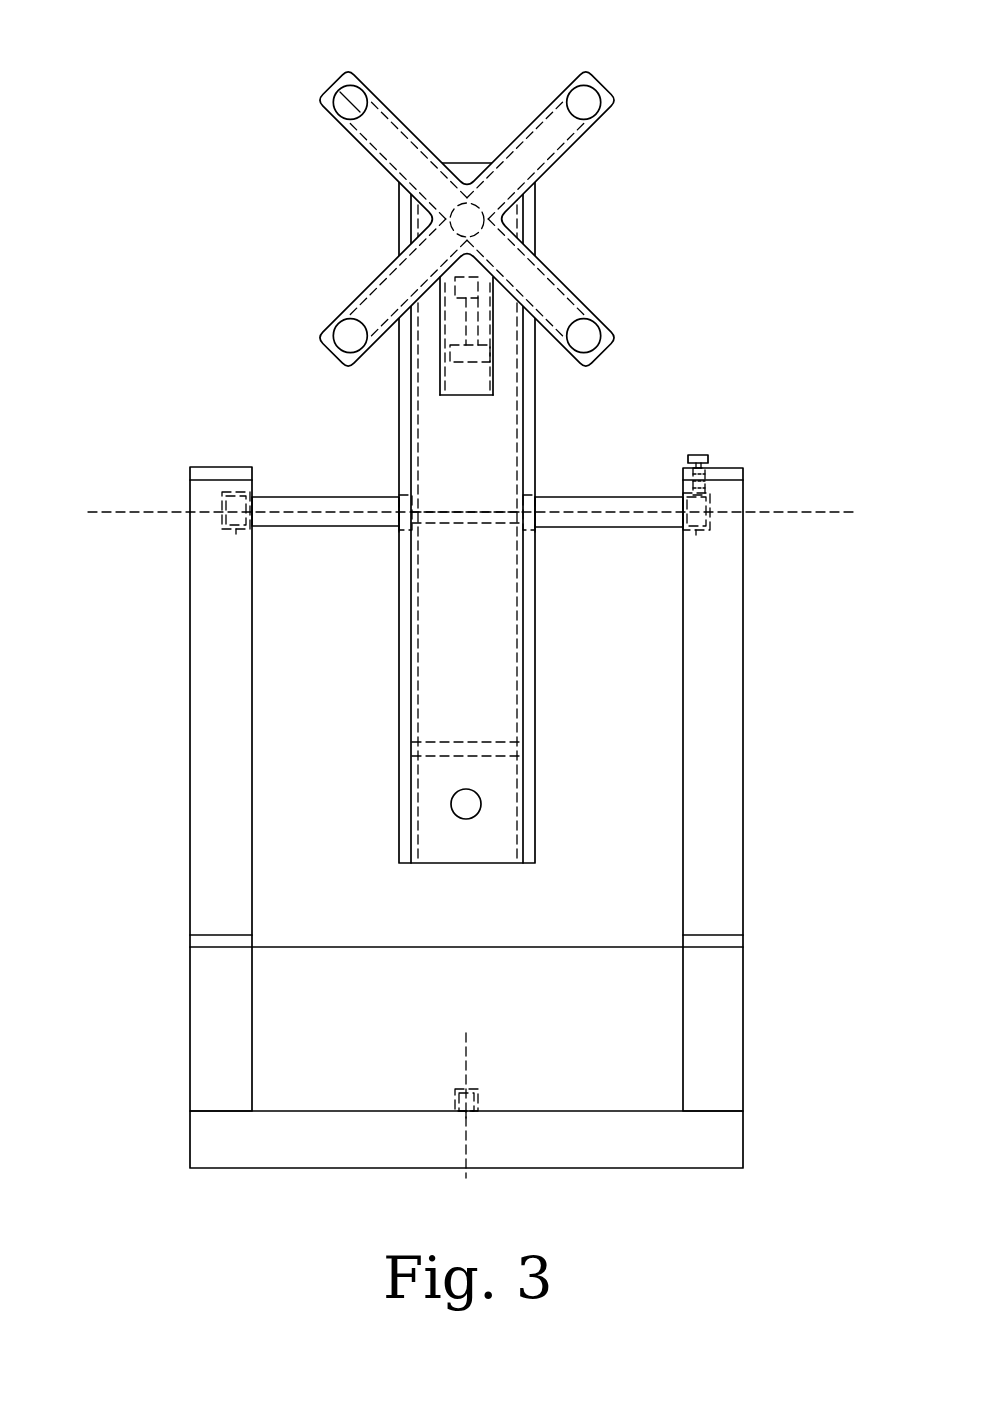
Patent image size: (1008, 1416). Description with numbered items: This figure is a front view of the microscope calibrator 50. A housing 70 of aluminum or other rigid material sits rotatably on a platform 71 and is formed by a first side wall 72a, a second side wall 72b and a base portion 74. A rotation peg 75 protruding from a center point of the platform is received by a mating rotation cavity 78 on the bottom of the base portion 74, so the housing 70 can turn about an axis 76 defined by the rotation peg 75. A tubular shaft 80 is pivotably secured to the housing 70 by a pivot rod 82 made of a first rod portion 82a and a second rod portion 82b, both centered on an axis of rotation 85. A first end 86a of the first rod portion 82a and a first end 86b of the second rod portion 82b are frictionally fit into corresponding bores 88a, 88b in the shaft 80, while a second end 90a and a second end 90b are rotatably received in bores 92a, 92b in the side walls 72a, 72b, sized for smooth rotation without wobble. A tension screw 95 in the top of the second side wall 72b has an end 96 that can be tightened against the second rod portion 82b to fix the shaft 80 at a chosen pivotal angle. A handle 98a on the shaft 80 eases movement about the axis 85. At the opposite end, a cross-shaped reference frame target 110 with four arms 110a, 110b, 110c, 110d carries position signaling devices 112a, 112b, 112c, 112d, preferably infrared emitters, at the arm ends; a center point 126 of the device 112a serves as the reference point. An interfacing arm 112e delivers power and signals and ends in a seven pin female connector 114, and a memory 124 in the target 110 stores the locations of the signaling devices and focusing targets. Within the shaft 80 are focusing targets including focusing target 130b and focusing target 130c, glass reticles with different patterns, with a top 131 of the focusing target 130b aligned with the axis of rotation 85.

The microscope calibrator 50 is at (738, 182).
The housing 70 is at (788, 672).
The platform 71 is at (718, 1136).
The first side wall 72a is at (200, 625).
The second side wall 72b is at (718, 575).
The base portion 74 is at (630, 985).
The rotation peg 75 is at (480, 1113).
The axis 76 is at (464, 1060).
The rotation cavity 78 is at (480, 1100).
The tubular shaft 80 is at (530, 402).
The pivot rod 82 is at (333, 457).
The first rod portion 82a is at (312, 497).
The second rod portion 82b is at (578, 498).
The axis of rotation 85 is at (140, 512).
The first end of the first rod portion 86a is at (396, 497).
The first end of the second rod portion 86b is at (531, 497).
The bore 88a is at (400, 530).
The bore 88b is at (531, 530).
The second end of the first rod portion 90a is at (240, 520).
The second end of the second rod portion 90b is at (683, 520).
The bore 92a is at (238, 530).
The bore 92b is at (696, 530).
The tension screw 95 is at (700, 453).
The end of the tension screw 96 is at (706, 490).
The handle 98a is at (466, 804).
The reference frame target 110 is at (402, 91).
The arm 110a is at (350, 95).
The arm 110b is at (600, 100).
The arm 110c is at (562, 300).
The arm 110d is at (380, 290).
The position signaling device 112a is at (348, 105).
The position signaling device 112b is at (590, 105).
The position signaling device 112c is at (590, 340).
The position signaling device 112d is at (345, 340).
The interfacing arm 112e is at (495, 368).
The seven pin female connector 114 is at (468, 380).
The memory 124 is at (472, 277).
The center point 126 is at (352, 100).
The focusing target 130b is at (470, 530).
The focusing target 130c is at (485, 742).
The top of the focusing target 131 is at (437, 512).